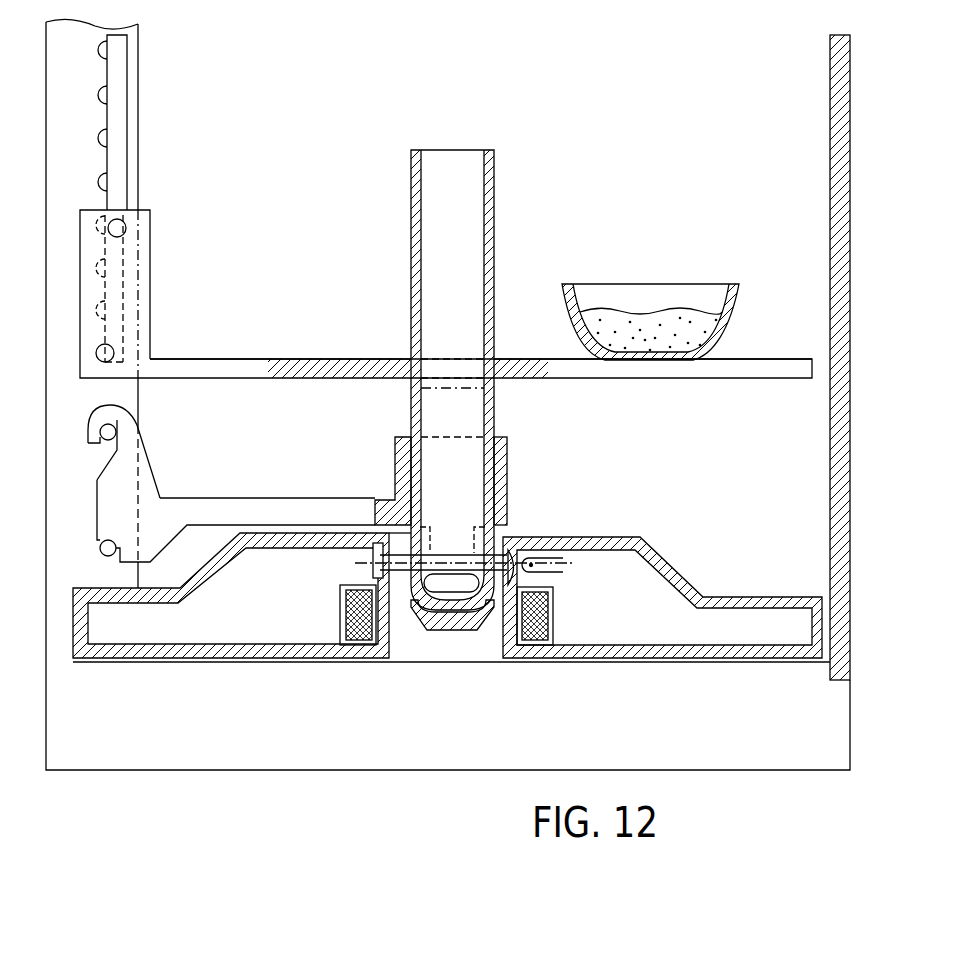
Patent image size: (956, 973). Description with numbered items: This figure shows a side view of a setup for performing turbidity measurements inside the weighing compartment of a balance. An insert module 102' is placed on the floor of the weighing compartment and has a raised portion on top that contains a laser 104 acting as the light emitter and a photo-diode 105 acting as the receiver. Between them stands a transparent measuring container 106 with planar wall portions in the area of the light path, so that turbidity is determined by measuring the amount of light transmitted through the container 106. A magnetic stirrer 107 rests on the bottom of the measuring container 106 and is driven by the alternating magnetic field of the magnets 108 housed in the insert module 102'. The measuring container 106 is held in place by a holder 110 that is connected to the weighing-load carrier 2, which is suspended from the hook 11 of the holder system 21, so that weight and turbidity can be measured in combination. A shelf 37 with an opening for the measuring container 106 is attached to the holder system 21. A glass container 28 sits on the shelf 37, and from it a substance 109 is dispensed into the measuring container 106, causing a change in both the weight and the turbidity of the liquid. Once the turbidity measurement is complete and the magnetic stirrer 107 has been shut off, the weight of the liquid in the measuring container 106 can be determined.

The holder system 21 is at (142, 172).
The shelf 37 is at (223, 363).
The hook 11 is at (139, 424).
The weighing-load carrier 2 is at (172, 497).
The holder 110 is at (395, 453).
The measuring container 106 is at (495, 198).
The magnetic stirrer 107 is at (450, 590).
The insert module 102' is at (451, 594).
The laser 104 is at (372, 562).
The photo-diode 105 is at (529, 560).
The magnets 108 is at (342, 608).
The glass container 28 is at (740, 295).
The substance 109 is at (655, 317).